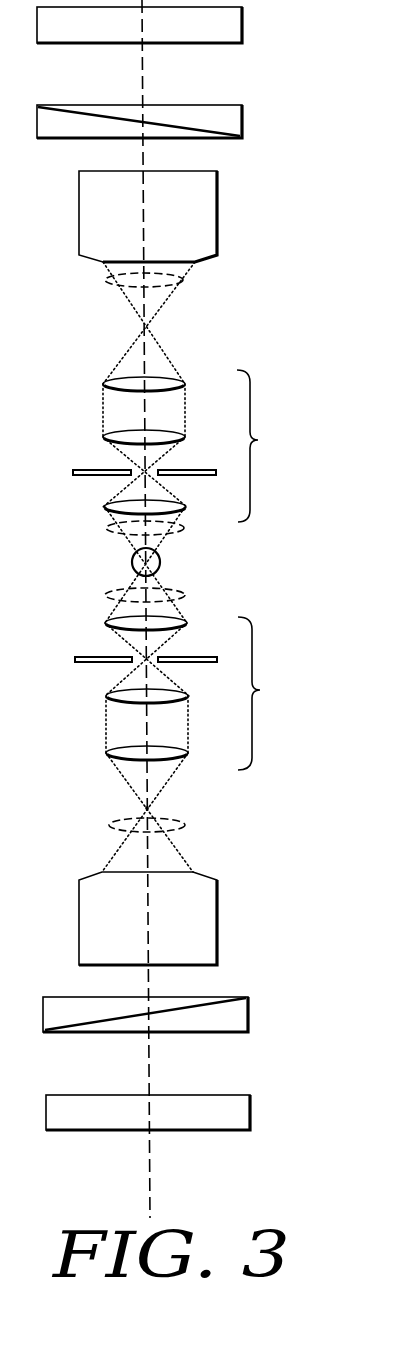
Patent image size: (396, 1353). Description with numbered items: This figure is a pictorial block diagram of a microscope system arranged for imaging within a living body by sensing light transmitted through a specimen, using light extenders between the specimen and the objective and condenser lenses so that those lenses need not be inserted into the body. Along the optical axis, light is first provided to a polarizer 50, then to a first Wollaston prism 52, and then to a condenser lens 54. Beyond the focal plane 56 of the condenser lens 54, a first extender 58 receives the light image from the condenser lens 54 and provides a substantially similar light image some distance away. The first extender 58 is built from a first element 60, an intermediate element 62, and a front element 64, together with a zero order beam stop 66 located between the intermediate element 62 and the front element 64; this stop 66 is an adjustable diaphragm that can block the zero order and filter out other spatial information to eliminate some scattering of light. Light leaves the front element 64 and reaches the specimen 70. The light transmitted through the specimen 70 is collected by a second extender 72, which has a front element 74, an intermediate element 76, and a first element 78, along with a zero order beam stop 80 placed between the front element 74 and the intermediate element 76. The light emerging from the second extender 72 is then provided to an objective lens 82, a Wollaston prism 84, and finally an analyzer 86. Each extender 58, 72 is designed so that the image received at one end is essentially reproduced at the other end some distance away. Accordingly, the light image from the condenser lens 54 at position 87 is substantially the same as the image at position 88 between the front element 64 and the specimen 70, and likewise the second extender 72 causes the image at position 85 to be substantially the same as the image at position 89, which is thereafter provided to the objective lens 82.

The polarizer 50 is at (250, 1101).
The first Wollaston prism 52 is at (248, 1003).
The condenser lens 54 is at (217, 903).
The focal plane 56 is at (150, 808).
The first extender 58 is at (264, 693).
The first element 60 is at (107, 752).
The intermediate element 62 is at (106, 695).
The front element 64 is at (105, 622).
The zero order beam stop 66 is at (75, 657).
The specimen 70 is at (160, 562).
The second extender 72 is at (260, 446).
The front element 74 is at (105, 507).
The intermediate element 76 is at (103, 437).
The first element 78 is at (103, 384).
The zero order beam stop 80 is at (73, 473).
The objective lens 82 is at (217, 210).
The Wollaston prism 84 is at (242, 118).
The analyzer 86 is at (242, 15).
The position 85 is at (105, 528).
The position 87 is at (110, 822).
The position 88 is at (105, 592).
The position 89 is at (105, 285).